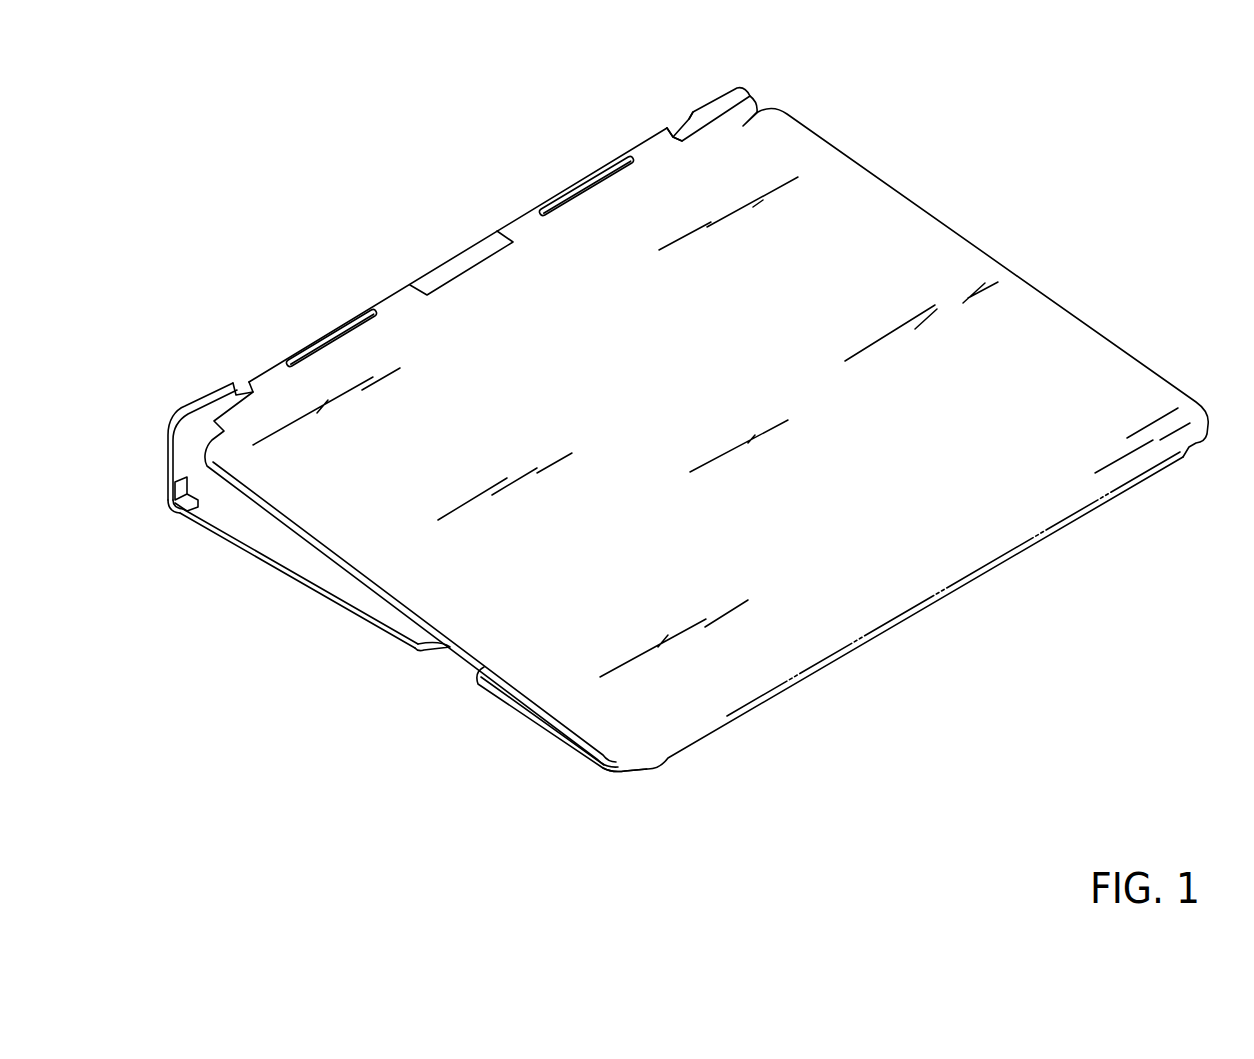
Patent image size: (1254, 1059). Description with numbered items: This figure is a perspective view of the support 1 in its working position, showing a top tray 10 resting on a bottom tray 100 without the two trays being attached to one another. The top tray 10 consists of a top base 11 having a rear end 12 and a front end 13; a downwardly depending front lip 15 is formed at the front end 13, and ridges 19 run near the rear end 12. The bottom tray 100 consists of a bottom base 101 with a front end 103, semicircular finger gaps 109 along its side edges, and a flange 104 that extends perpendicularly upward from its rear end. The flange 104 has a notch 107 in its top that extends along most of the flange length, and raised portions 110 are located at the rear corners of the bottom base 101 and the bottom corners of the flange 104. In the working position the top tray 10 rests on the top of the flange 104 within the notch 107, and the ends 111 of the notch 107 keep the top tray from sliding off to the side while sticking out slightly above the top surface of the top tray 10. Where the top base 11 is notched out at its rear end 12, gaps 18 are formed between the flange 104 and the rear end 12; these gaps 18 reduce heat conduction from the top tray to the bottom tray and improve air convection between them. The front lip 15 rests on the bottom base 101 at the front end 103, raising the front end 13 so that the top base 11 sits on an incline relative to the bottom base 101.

The support 1 is at (915, 176).
The top tray 10 is at (1034, 344).
The top base 11 is at (960, 236).
The rear end 12 is at (565, 187).
The front end 13 is at (884, 636).
The front lip 15 is at (698, 748).
The gaps 18 is at (742, 90).
The ridges 19 is at (543, 197).
The bottom tray 100 is at (282, 552).
The bottom base 101 is at (368, 604).
The front end 103 is at (625, 773).
The flange 104 is at (212, 404).
The notch 107 is at (681, 132).
The finger gaps 109 is at (458, 662).
The raised portions 110 is at (175, 512).
The ends of notch 111 is at (692, 118).